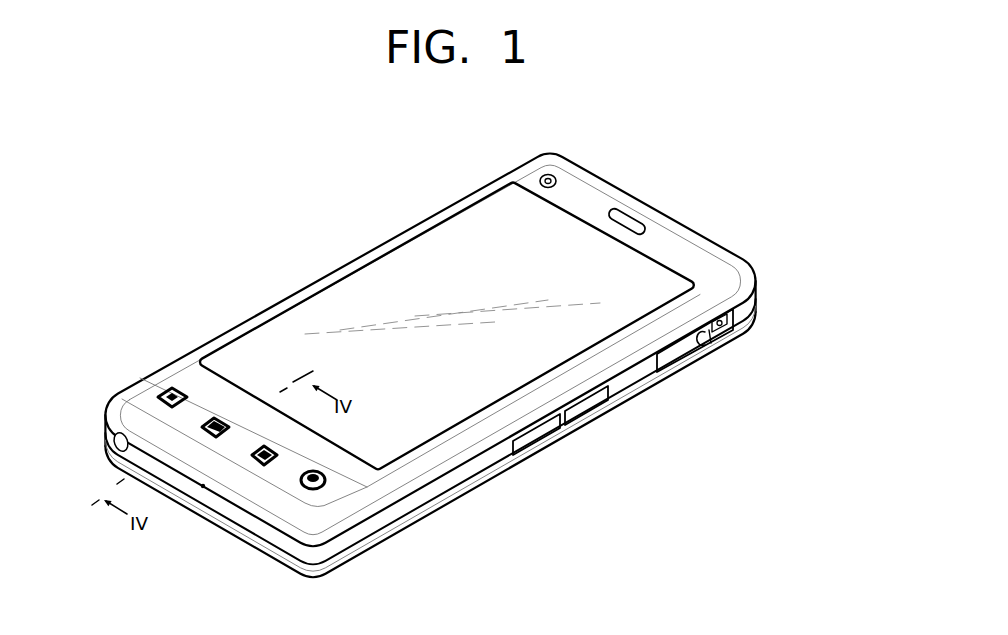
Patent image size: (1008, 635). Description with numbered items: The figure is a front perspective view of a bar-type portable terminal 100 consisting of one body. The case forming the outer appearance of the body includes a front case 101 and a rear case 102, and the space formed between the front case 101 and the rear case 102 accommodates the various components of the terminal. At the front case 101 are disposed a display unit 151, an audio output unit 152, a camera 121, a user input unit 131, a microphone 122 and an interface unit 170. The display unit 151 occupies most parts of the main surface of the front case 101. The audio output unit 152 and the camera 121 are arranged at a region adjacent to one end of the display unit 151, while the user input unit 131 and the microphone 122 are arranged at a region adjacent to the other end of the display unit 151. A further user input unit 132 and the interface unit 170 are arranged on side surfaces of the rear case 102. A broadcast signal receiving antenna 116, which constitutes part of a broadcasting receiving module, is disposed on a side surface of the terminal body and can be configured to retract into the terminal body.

The portable terminal 100 is at (276, 249).
The front case 101 is at (752, 272).
The rear case 102 is at (748, 326).
The broadcast signal receiving antenna 116 is at (115, 449).
The camera 121 is at (553, 176).
The microphone 122 is at (203, 488).
The user input unit 131 is at (170, 386).
The user input unit 132 is at (578, 415).
The display unit 151 is at (411, 263).
The audio output unit 152 is at (628, 219).
The interface unit 170 is at (680, 351).